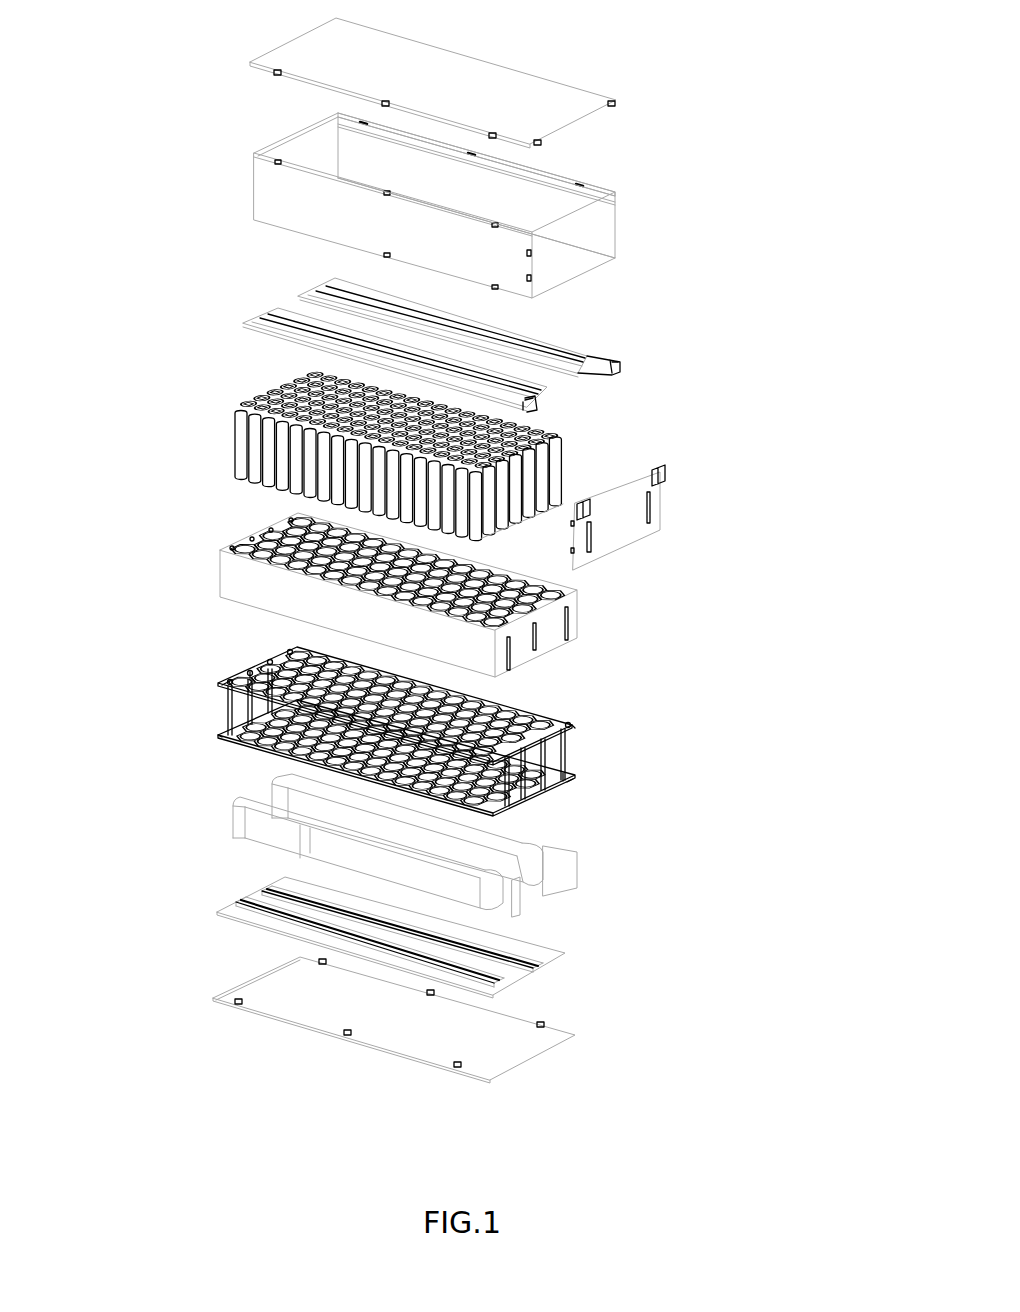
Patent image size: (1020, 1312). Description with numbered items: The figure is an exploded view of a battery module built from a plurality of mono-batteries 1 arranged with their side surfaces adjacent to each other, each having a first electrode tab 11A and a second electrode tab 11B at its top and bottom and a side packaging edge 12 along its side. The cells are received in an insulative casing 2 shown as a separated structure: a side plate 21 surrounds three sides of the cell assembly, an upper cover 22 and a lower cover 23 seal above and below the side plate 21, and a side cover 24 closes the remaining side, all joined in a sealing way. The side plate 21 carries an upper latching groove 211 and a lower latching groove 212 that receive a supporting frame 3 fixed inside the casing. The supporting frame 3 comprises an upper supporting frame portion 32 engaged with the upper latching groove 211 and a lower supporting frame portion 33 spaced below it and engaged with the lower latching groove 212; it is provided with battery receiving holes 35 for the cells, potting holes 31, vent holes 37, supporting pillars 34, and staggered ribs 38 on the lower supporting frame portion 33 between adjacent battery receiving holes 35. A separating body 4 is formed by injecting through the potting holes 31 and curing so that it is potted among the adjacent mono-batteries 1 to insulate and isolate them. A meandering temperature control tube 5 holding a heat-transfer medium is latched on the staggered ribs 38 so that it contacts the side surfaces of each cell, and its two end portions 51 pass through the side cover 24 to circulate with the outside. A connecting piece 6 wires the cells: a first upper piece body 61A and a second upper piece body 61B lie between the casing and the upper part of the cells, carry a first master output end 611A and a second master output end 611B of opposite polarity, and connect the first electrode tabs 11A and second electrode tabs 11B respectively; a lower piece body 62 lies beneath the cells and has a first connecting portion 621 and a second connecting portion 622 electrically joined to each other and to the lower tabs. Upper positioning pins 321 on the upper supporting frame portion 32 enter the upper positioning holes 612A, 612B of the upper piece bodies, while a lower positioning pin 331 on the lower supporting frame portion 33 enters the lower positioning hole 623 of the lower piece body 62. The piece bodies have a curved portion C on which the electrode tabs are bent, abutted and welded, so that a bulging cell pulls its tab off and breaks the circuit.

The mono-battery 1 is at (408, 461).
The first electrode tab 11A is at (240, 403).
The second electrode tab 11B is at (236, 455).
The side packaging edge 12 is at (566, 478).
The insulative casing 2 is at (478, 151).
The side plate 21 is at (517, 202).
The upper latching groove 211 is at (615, 198).
The lower latching groove 212 is at (615, 250).
The upper cover 22 is at (568, 88).
The lower cover 23 is at (213, 998).
The side cover 24 is at (662, 515).
The supporting frame 3 is at (433, 706).
The potting hole 31 is at (401, 673).
The upper positioning pin 321 is at (268, 661).
The upper supporting frame portion 32 is at (575, 730).
The lower supporting frame portion 33 is at (395, 764).
The lower positioning pin 331 is at (567, 784).
The supporting pillar 34 is at (228, 709).
The battery receiving hole 35 is at (250, 672).
The vent hole 37 is at (228, 682).
The staggered rib 38 is at (226, 740).
The separating body 4 is at (576, 622).
The temperature control tube 5 is at (503, 845).
The end portion 51 is at (577, 873).
The connecting piece 6 is at (399, 592).
The first upper piece body 61A is at (425, 326).
The second upper piece body 61B is at (461, 296).
The first master output end 611A is at (550, 396).
The second master output end 611B is at (617, 364).
The upper positioning hole 612A is at (248, 322).
The upper positioning hole 612B is at (313, 285).
The lower piece body 62 is at (386, 914).
The first connecting portion 621 is at (513, 985).
The second connecting portion 622 is at (545, 961).
The lower positioning hole 623 is at (283, 878).
The curved portion C is at (533, 397).